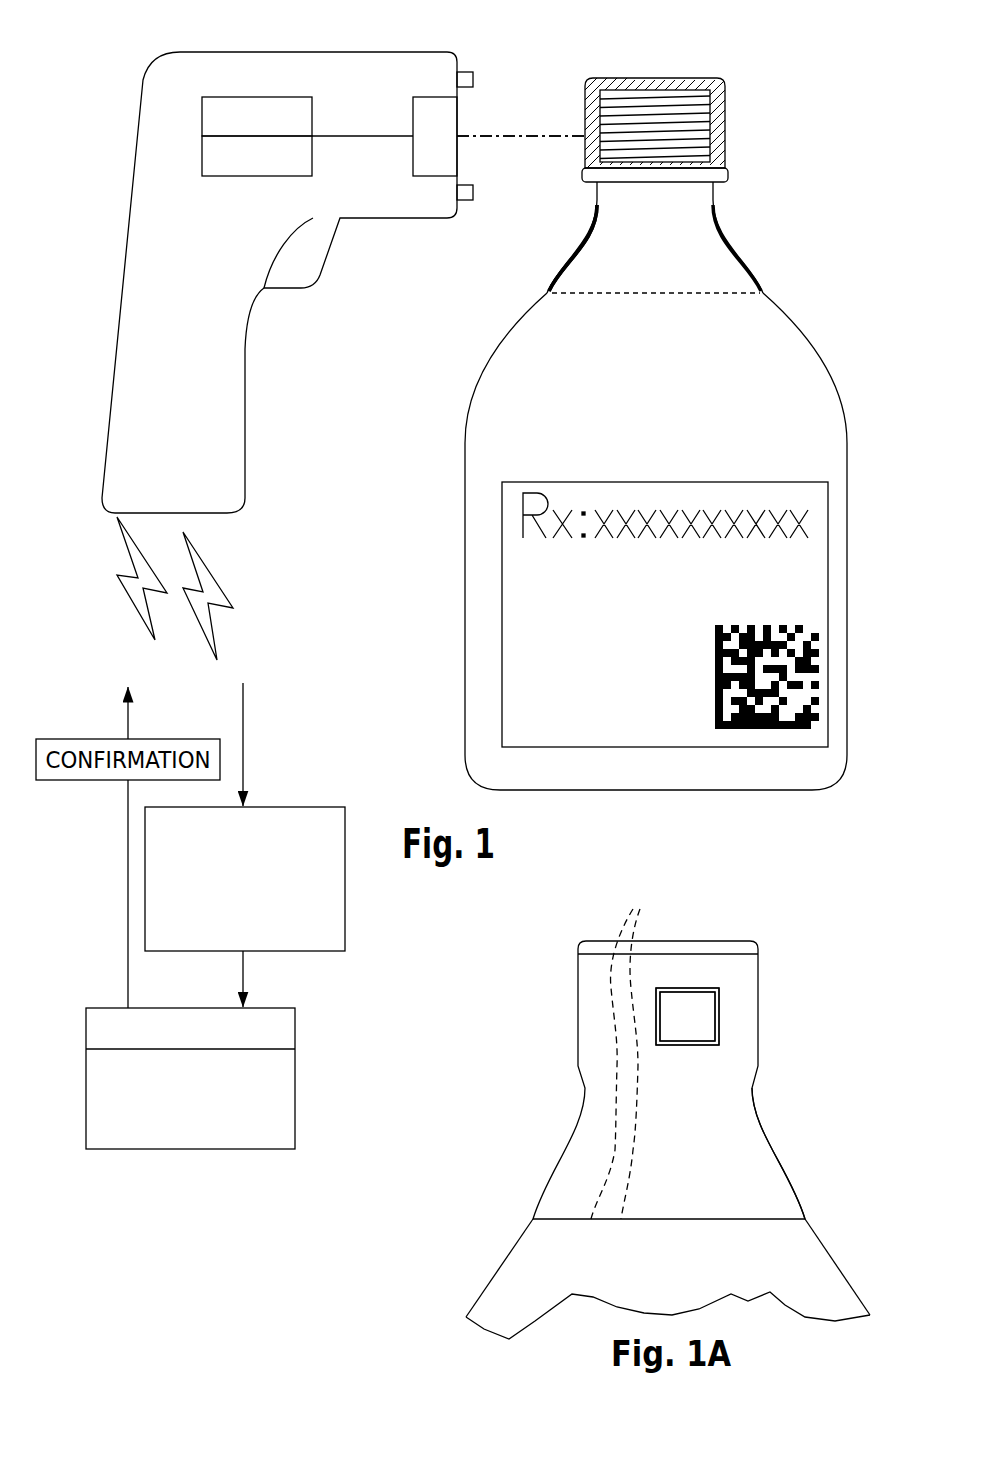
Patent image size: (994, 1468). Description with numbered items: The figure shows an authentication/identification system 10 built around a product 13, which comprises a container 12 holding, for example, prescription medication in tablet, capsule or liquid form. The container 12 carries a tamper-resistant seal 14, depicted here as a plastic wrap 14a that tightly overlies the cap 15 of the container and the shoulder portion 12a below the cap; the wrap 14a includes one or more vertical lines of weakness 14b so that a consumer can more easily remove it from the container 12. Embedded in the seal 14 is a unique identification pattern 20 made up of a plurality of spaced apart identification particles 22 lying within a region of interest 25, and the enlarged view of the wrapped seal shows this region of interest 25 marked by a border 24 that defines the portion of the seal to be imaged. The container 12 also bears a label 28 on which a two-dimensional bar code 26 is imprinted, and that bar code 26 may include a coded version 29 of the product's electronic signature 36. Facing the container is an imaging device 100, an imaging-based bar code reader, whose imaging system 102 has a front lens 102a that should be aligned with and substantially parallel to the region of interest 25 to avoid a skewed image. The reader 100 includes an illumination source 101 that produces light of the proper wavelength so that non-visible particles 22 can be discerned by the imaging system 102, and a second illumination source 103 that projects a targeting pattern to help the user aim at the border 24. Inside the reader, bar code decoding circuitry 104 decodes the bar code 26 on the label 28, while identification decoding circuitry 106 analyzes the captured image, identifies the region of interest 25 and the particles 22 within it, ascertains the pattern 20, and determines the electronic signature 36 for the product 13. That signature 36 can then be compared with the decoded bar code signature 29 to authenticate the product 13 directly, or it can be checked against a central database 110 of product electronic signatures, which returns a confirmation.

In FIG. 1, the authentication/identification system 10 is at (657, 403).
In FIG. 1, the container 12 is at (652, 485).
In FIG. 1, the shoulder portion 12a is at (638, 180).
In FIG. 1, the product 13 is at (447, 472).
In FIG. 1, the tamper-resistant seal 14 is at (640, 99).
In FIG. 1A, the tamper-resistant seal 14 is at (577, 1111).
In FIG. 1, the plastic wrap 14a is at (727, 233).
In FIG. 1A, the plastic wrap 14a is at (754, 1113).
In FIG. 1A, the vertical lines of weakness 14b is at (633, 1056).
In FIG. 1, the cap 15 is at (668, 82).
In FIG. 1A, the identification pattern 20 is at (716, 1004).
In FIG. 1A, the identification particles 22 is at (709, 1029).
In FIG. 1A, the border 24 is at (693, 988).
In FIG. 1, the region of interest 25 is at (588, 127).
In FIG. 1A, the region of interest 25 is at (712, 998).
In FIG. 1, the bar code 26 is at (716, 611).
In FIG. 1, the label 28 is at (832, 493).
In FIG. 1, the coded version of electronic signature 29 is at (786, 622).
In FIG. 1, the electronic signature 36 is at (282, 807).
In FIG. 1, the imaging device 100 is at (106, 270).
In FIG. 1, the illumination source 101 is at (465, 72).
In FIG. 1, the imaging system 102 is at (186, 135).
In FIG. 1, the front lens 102a is at (457, 117).
In FIG. 1, the second illumination source 103 is at (467, 200).
In FIG. 1, the bar code decoding circuitry 104 is at (254, 122).
In FIG. 1, the identification decoding circuitry 106 is at (250, 154).
In FIG. 1, the central database 110 is at (296, 1028).